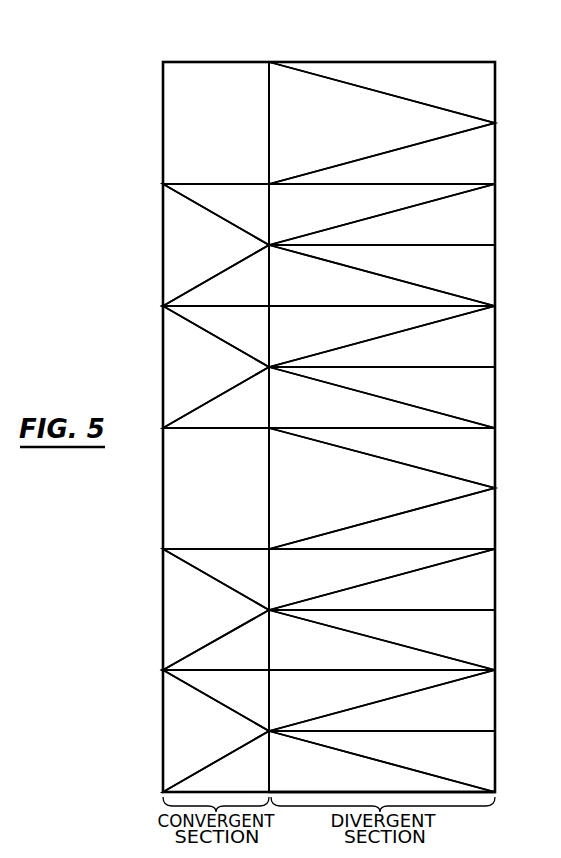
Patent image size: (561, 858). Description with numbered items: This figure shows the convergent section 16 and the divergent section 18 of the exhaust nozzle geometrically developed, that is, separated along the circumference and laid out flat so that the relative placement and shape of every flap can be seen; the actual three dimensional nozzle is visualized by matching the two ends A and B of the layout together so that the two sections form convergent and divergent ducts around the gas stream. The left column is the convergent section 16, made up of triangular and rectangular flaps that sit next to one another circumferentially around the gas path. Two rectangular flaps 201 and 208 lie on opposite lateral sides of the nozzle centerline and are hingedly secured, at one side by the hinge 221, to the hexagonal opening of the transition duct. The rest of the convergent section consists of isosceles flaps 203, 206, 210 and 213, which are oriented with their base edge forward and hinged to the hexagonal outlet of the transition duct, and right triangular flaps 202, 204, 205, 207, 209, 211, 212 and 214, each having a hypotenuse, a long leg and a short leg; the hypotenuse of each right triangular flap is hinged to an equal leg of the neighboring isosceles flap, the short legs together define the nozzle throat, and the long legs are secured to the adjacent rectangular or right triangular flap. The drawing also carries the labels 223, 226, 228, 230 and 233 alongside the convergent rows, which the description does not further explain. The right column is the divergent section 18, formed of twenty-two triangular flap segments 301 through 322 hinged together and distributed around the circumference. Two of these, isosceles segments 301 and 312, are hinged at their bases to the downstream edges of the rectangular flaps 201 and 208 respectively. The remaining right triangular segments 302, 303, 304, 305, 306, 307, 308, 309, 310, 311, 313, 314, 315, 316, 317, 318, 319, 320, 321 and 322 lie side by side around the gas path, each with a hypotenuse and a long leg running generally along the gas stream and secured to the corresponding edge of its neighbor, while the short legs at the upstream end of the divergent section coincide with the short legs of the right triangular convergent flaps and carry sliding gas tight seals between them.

The end A of the developed layout A is at (472, 62).
The end B of the developed layout B is at (483, 794).
The convergent section 16 is at (222, 62).
The divergent section 18 is at (392, 62).
The hinge 221 is at (163, 120).
The second circumferential row 223 is at (163, 242).
The third circumferential row 226 is at (163, 364).
The fourth circumferential row 228 is at (163, 485).
The fifth circumferential row 230 is at (163, 606).
The sixth circumferential row 233 is at (163, 729).
The rectangular flap 201 is at (198, 134).
The right triangular flap 202 is at (225, 214).
The isosceles triangular flap 203 is at (185, 254).
The right triangular flap 204 is at (225, 296).
The right triangular flap 205 is at (225, 334).
The isosceles triangular flap 206 is at (185, 376).
The right triangular flap 207 is at (225, 416).
The rectangular flap 208 is at (198, 497).
The right triangular flap 209 is at (222, 576).
The isosceles triangular flap 210 is at (185, 617).
The right triangular flap 211 is at (222, 659).
The right triangular flap 212 is at (222, 698).
The isosceles triangular flap 213 is at (185, 739).
The right triangular flap 214 is at (225, 779).
The isosceles divergent flap segment 301 is at (295, 134).
The right triangular divergent flap segment 302 is at (430, 169).
The right triangular divergent flap segment 303 is at (295, 216).
The right triangular divergent flap segment 304 is at (430, 237).
The right triangular divergent flap segment 305 is at (430, 276).
The right triangular divergent flap segment 306 is at (295, 294).
The right triangular divergent flap segment 307 is at (295, 336).
The right triangular divergent flap segment 308 is at (430, 350).
The right triangular divergent flap segment 309 is at (430, 401).
The right triangular divergent flap segment 310 is at (295, 416).
The right triangular divergent flap segment 311 is at (430, 457).
The isosceles divergent flap segment 312 is at (295, 497).
The right triangular divergent flap segment 313 is at (430, 536).
The right triangular divergent flap segment 314 is at (295, 577).
The right triangular divergent flap segment 315 is at (430, 594).
The right triangular divergent flap segment 316 is at (430, 642).
The right triangular divergent flap segment 317 is at (295, 659).
The right triangular divergent flap segment 318 is at (295, 699).
The right triangular divergent flap segment 319 is at (430, 715).
The right triangular divergent flap segment 320 is at (430, 762).
The right triangular divergent flap segment 321 is at (295, 779).
The right triangular divergent flap segment 322 is at (430, 92).